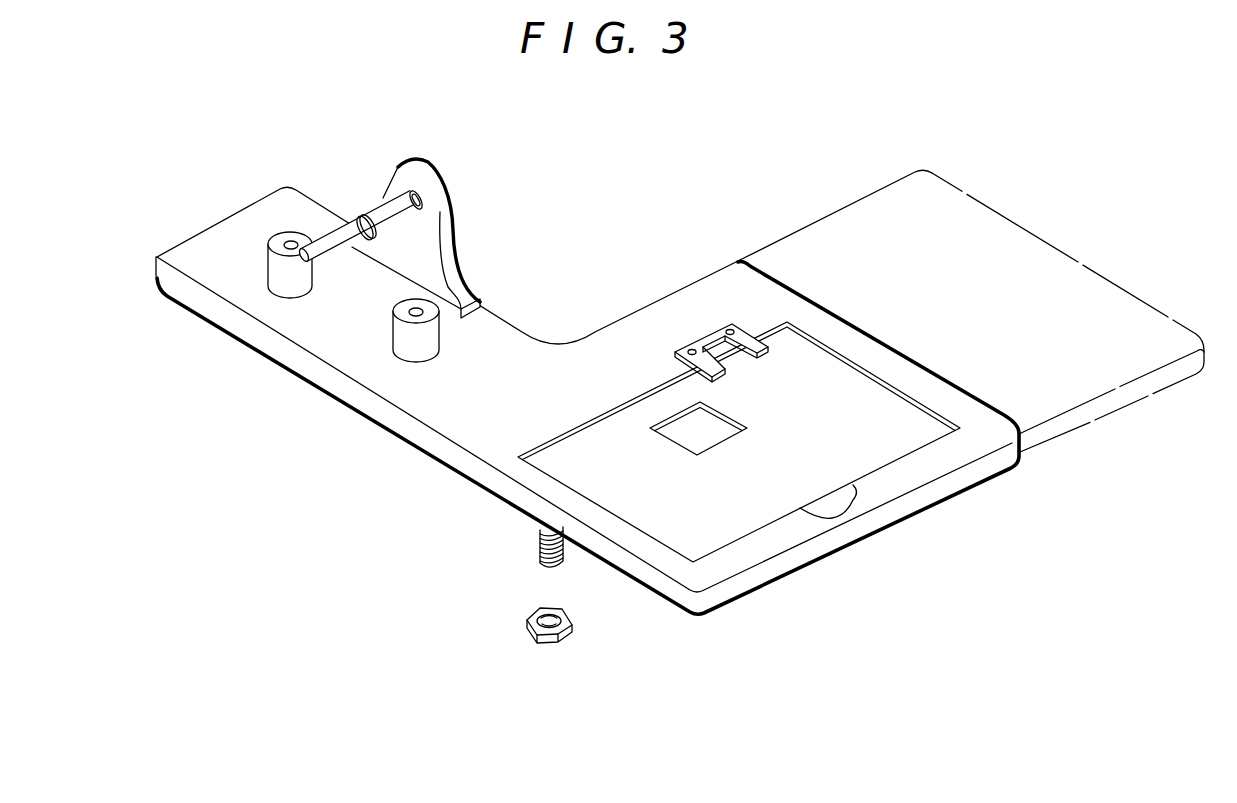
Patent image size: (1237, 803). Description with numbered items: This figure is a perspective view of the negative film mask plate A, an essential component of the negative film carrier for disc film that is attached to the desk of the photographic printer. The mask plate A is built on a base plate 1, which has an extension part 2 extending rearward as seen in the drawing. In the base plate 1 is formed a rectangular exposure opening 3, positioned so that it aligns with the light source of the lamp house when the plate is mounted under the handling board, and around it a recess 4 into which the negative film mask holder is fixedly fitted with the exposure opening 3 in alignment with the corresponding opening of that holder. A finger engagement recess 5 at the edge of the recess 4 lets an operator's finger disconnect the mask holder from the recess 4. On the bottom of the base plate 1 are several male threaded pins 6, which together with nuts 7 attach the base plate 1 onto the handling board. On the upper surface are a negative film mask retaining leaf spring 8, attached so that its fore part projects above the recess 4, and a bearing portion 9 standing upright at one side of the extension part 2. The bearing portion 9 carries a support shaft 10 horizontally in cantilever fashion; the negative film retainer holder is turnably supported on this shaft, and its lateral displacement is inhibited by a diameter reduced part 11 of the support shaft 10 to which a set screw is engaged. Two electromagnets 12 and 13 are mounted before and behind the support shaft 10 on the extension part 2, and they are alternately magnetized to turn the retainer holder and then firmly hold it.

The base plate 1 is at (603, 337).
The extension part 2 is at (312, 350).
The rectangular exposure opening 3 is at (717, 427).
The recess 4 is at (735, 532).
The finger engagement recess 5 is at (853, 502).
The male threaded pin 6 is at (540, 540).
The nut 7 is at (572, 628).
The negative film mask retaining leaf spring 8 is at (707, 340).
The bearing portion 9 is at (446, 237).
The support shaft 10 is at (330, 247).
The diameter reduced part 11 is at (360, 216).
The electromagnet 12 is at (278, 286).
The electromagnet 13 is at (420, 352).
The negative film mask plate A is at (537, 284).